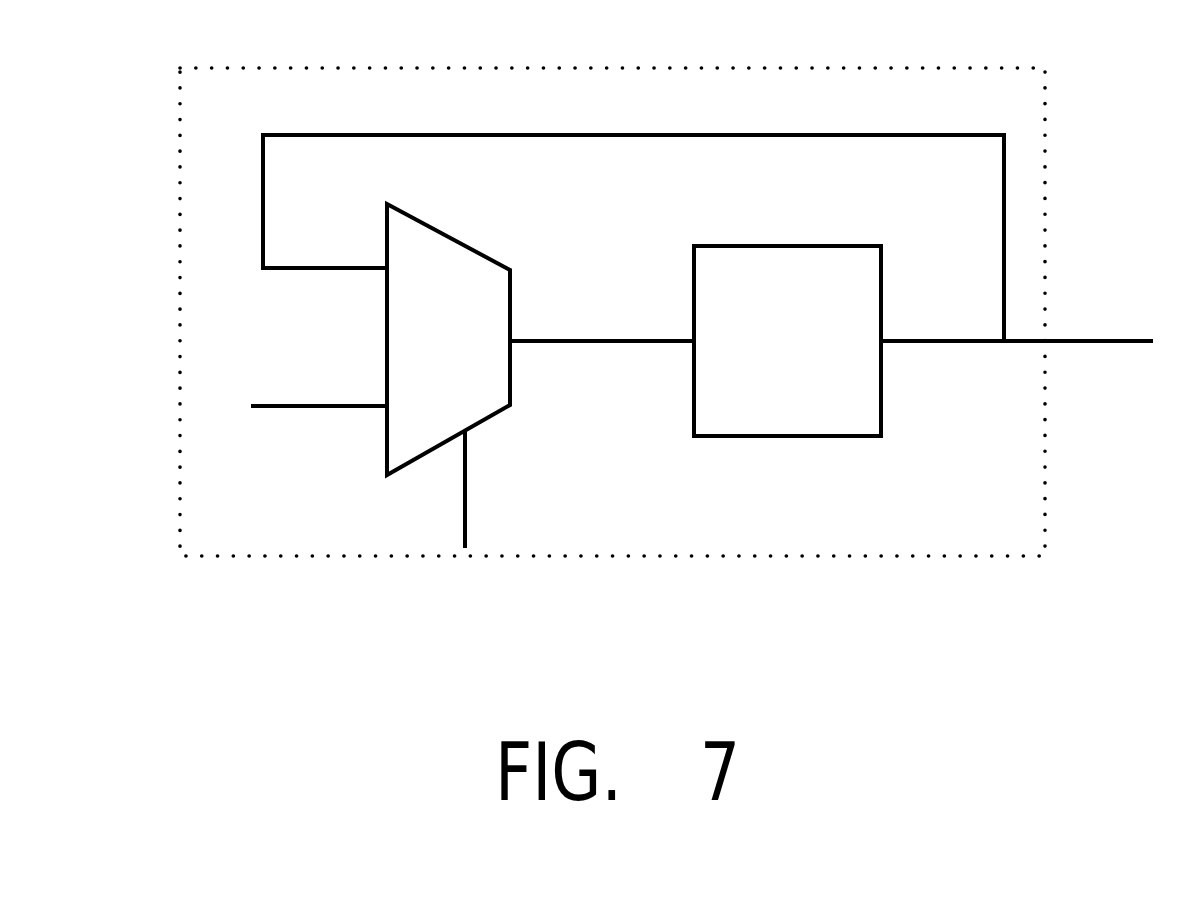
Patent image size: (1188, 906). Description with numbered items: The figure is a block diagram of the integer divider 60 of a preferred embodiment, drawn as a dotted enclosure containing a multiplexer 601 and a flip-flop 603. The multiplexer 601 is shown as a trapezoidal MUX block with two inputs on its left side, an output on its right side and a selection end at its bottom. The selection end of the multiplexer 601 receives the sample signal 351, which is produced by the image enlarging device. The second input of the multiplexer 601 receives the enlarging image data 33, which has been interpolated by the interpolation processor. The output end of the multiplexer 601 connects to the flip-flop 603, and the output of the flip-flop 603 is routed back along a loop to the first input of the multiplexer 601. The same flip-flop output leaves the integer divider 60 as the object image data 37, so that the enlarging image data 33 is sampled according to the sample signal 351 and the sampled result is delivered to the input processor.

The integer divider 60 is at (1045, 98).
The multiplexer 601 is at (510, 270).
The flip-flop 603 is at (790, 246).
The object image data 37 is at (1093, 341).
The enlarging image data 33 is at (307, 406).
The sample signal 351 is at (465, 498).